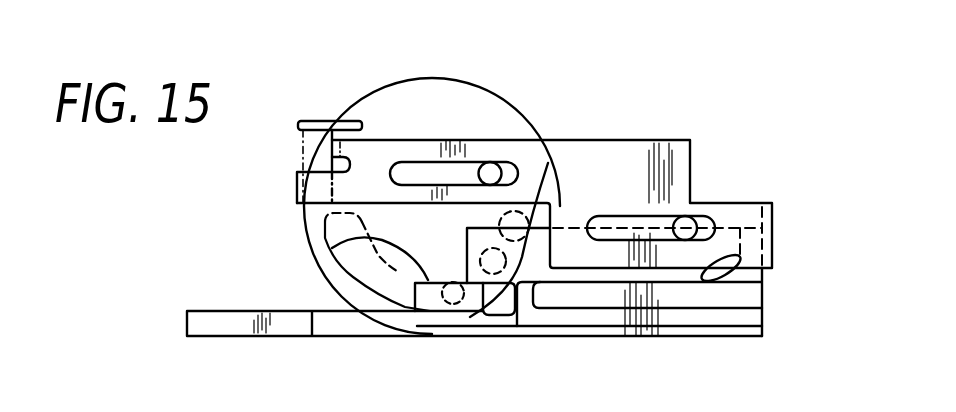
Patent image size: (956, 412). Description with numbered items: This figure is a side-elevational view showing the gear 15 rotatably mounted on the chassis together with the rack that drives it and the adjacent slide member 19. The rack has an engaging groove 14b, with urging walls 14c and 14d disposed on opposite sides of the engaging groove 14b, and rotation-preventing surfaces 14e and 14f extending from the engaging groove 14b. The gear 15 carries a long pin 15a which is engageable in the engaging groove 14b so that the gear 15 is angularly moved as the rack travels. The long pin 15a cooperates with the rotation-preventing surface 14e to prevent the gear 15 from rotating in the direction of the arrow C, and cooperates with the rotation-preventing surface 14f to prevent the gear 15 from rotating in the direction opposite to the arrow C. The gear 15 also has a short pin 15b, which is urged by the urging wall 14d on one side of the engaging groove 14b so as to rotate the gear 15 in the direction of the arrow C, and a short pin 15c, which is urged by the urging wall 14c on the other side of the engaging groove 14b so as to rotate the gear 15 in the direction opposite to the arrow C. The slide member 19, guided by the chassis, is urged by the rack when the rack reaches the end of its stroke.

The slide member 19 is at (383, 140).
The gear 15 is at (428, 92).
The arrow C is at (500, 63).
The short pin 15c is at (520, 222).
The urging wall 14c is at (545, 297).
The rotation-preventing surface 14e is at (332, 248).
The short pin 15b is at (457, 292).
The urging wall 14d is at (467, 295).
The long pin 15a is at (493, 262).
The engaging groove 14b is at (508, 313).
The rotation-preventing surface 14f is at (760, 268).